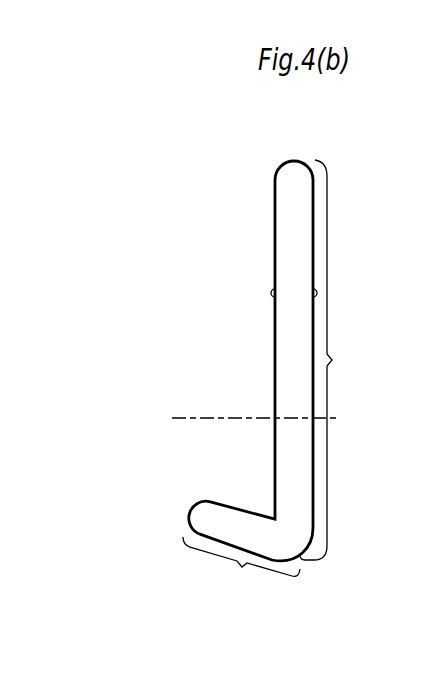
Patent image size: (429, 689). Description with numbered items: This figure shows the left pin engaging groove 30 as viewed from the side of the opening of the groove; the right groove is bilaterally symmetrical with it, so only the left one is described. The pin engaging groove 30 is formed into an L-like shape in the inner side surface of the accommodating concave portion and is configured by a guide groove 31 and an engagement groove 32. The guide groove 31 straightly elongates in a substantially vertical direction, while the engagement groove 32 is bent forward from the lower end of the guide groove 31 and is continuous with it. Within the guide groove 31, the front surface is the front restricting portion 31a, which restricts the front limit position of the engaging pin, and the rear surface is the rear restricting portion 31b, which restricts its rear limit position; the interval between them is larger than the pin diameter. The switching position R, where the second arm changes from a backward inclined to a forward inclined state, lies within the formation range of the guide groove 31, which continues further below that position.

The pin engaging groove 30 is at (263, 221).
The guide groove 31 is at (296, 360).
The front restricting portion 31a is at (271, 293).
The rear restricting portion 31b is at (318, 296).
The engagement groove 32 is at (241, 567).
The switching position R is at (243, 419).